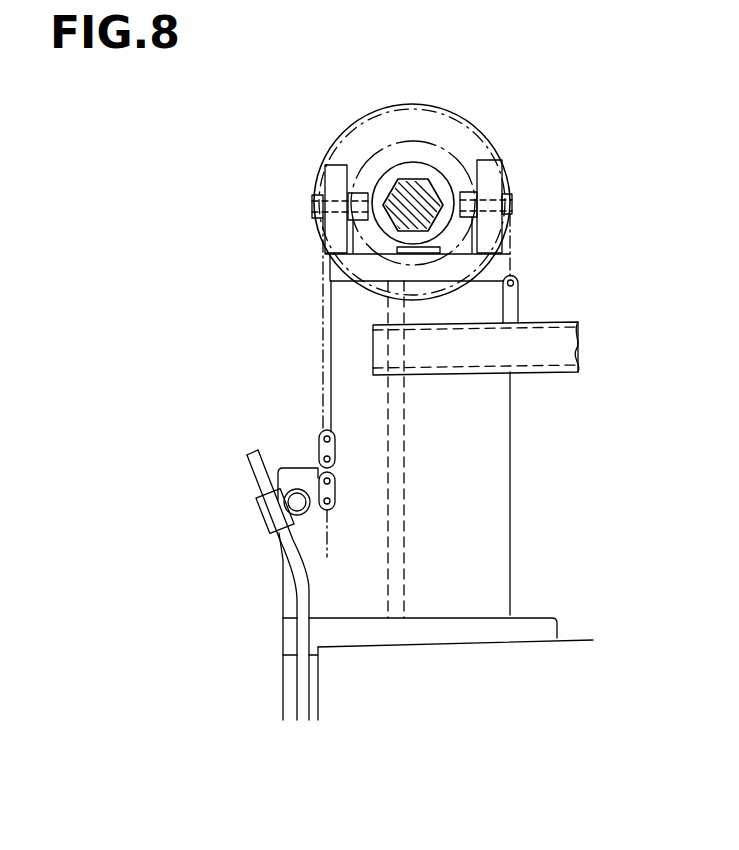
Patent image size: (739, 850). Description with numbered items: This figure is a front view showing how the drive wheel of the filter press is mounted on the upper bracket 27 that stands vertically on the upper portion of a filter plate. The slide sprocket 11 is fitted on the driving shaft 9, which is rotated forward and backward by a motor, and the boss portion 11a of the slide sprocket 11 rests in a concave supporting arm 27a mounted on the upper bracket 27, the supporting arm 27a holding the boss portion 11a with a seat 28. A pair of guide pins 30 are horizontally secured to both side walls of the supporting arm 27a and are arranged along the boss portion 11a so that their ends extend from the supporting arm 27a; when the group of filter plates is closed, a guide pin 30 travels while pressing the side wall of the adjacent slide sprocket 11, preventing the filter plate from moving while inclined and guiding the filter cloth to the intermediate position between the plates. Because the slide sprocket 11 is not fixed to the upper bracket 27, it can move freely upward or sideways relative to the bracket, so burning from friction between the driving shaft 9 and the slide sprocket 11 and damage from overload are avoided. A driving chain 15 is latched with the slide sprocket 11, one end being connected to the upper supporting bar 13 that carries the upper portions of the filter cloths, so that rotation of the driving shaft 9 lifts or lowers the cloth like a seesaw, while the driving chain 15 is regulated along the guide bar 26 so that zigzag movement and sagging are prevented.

The slide sprocket 11 is at (337, 142).
The boss portion 11a is at (398, 160).
The driving shaft 9 is at (430, 178).
The guide pin 30 is at (463, 190).
The concave supporting arm 27a is at (492, 175).
The seat 28 is at (502, 233).
The upper supporting bar 13 is at (542, 348).
The driving chain 15 is at (317, 433).
The upper bracket 27 is at (493, 545).
The guide bar 26 is at (295, 597).